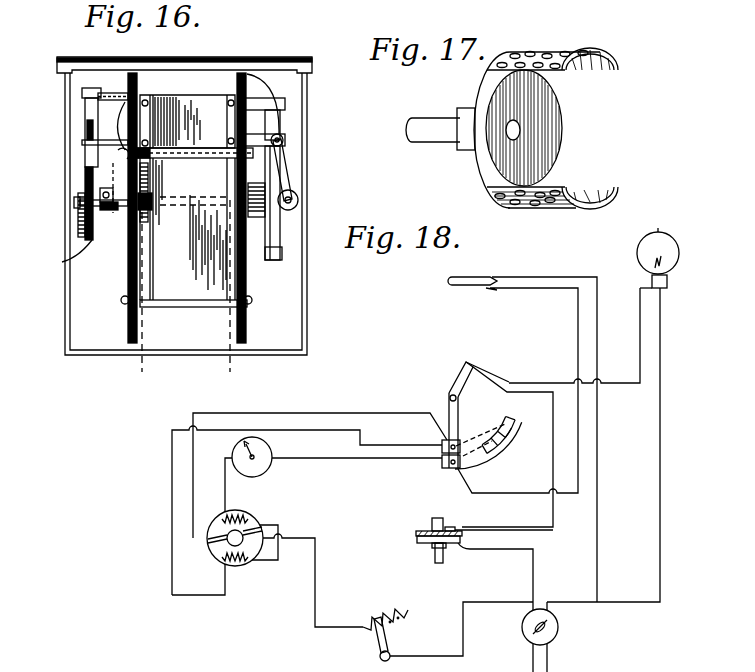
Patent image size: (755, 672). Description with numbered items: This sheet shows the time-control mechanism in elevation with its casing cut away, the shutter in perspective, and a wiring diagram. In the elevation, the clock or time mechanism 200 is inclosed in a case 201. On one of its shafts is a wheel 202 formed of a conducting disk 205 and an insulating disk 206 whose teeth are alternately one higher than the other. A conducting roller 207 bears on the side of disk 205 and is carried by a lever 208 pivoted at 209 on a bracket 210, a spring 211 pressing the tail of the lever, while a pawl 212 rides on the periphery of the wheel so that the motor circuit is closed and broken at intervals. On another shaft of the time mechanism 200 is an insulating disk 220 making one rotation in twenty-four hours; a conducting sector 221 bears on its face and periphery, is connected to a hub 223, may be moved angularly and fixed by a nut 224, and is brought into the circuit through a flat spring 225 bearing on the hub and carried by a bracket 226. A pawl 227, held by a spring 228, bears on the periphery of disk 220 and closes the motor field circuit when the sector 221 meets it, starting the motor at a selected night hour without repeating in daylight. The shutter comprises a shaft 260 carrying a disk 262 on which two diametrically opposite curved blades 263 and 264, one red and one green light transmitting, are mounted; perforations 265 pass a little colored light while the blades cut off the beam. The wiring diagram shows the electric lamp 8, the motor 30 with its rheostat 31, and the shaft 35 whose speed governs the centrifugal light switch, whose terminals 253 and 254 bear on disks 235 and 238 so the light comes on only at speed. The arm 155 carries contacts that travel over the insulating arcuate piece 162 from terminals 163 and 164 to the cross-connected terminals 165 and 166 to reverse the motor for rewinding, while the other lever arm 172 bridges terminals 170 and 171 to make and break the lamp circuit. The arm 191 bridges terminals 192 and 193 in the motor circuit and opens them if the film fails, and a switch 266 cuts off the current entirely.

In FIG. 18, the electric lamp 8 is at (678, 248).
In FIG. 18, the motor 30 is at (242, 566).
In FIG. 18, the rheostat 31 is at (392, 609).
In FIG. 18, the shaft 35 is at (444, 557).
In FIG. 18, the downwardly extending arm 155 is at (448, 410).
In FIG. 18, the arcuate piece 162 is at (502, 452).
In FIG. 18, the motor circuit terminal 163 is at (442, 445).
In FIG. 18, the motor circuit terminal 164 is at (448, 466).
In FIG. 18, the terminal 165 is at (498, 432).
In FIG. 18, the terminal 166 is at (516, 429).
In FIG. 18, the terminal 170 is at (490, 376).
In FIG. 18, the terminal 171 is at (484, 378).
In FIG. 18, the lever arm 172 is at (465, 365).
In FIG. 18, the arm 191 is at (468, 280).
In FIG. 18, the terminal 192 is at (489, 292).
In FIG. 18, the terminal 193 is at (491, 277).
In FIG. 18, the clock or time mechanism 200 is at (266, 469).
In FIG. 16, the case 201 is at (65, 342).
In FIG. 16, the wheel 202 is at (281, 230).
In FIG. 16, the conducting disk 205 is at (283, 255).
In FIG. 16, the insulating disk 206 is at (128, 314).
In FIG. 16, the conducting roller 207 is at (299, 200).
In FIG. 16, the lever 208 is at (287, 165).
In FIG. 16, the pivot 209 is at (284, 140).
In FIG. 16, the bracket 210 is at (276, 125).
In FIG. 16, the spring 211 is at (261, 103).
In FIG. 16, the pawl 212 is at (280, 108).
In FIG. 16, the insulating disk 220 is at (61, 254).
In FIG. 16, the sector 221 is at (78, 229).
In FIG. 16, the hub 223 is at (112, 215).
In FIG. 16, the nut 224 is at (74, 203).
In FIG. 16, the flat spring 225 is at (108, 188).
In FIG. 16, the bracket 226 is at (118, 143).
In FIG. 16, the pawl 227 is at (85, 103).
In FIG. 16, the spring 228 is at (87, 128).
In FIG. 18, the disk 235 is at (424, 531).
In FIG. 18, the disk 238 is at (422, 543).
In FIG. 18, the terminal 253 is at (451, 528).
In FIG. 18, the terminal 254 is at (472, 553).
In FIG. 17, the shaft 260 is at (445, 137).
In FIG. 17, the disk 262 is at (552, 118).
In FIG. 17, the curved blade 263 is at (603, 56).
In FIG. 17, the curved blade 264 is at (603, 189).
In FIG. 17, the perforations 265 is at (549, 56).
In FIG. 18, the switch 266 is at (553, 634).